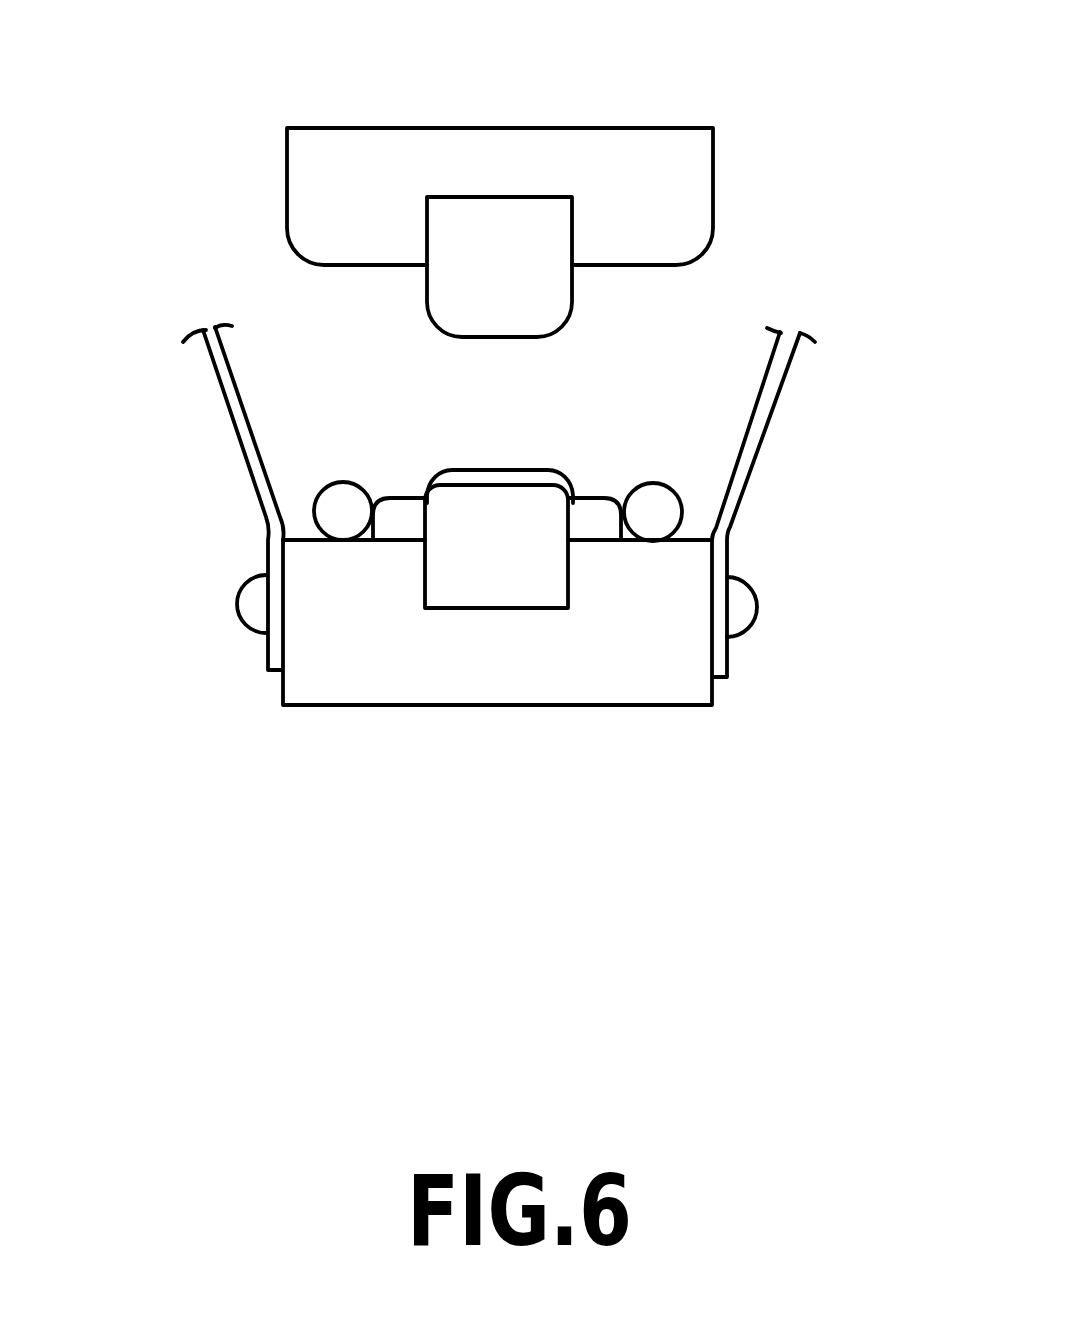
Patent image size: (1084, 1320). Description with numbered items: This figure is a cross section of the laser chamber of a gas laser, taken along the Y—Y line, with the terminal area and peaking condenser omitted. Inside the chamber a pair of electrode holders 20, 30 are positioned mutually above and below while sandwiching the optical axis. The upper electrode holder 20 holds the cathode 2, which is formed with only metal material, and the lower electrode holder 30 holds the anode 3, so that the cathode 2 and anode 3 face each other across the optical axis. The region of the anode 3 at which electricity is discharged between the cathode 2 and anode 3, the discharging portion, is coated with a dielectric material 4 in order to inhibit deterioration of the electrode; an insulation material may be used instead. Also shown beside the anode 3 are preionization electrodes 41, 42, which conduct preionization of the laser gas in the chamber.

The cathode 2 is at (498, 233).
The electrode holder 20 is at (703, 174).
The anode 3 is at (465, 580).
The dielectric material 4 is at (528, 480).
The electrode holder 30 is at (682, 678).
The preionization electrode 41 is at (347, 508).
The preionization electrode 42 is at (652, 514).